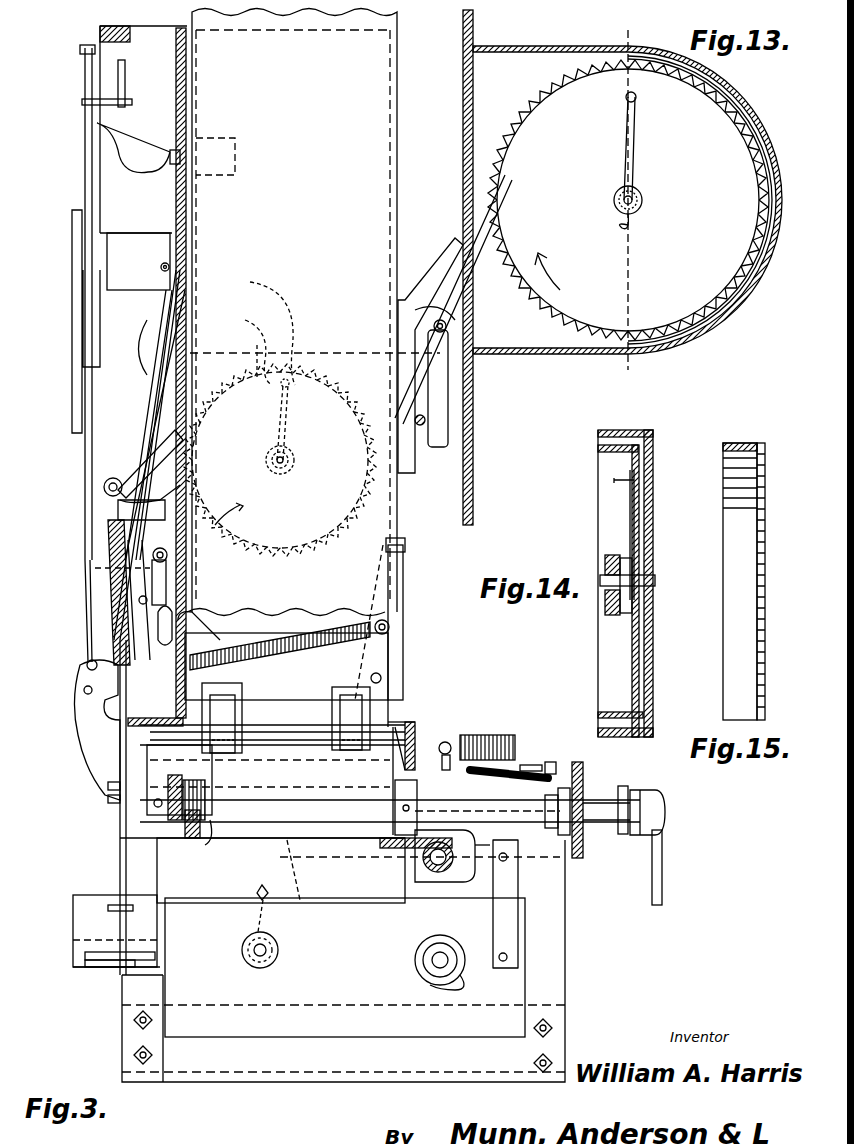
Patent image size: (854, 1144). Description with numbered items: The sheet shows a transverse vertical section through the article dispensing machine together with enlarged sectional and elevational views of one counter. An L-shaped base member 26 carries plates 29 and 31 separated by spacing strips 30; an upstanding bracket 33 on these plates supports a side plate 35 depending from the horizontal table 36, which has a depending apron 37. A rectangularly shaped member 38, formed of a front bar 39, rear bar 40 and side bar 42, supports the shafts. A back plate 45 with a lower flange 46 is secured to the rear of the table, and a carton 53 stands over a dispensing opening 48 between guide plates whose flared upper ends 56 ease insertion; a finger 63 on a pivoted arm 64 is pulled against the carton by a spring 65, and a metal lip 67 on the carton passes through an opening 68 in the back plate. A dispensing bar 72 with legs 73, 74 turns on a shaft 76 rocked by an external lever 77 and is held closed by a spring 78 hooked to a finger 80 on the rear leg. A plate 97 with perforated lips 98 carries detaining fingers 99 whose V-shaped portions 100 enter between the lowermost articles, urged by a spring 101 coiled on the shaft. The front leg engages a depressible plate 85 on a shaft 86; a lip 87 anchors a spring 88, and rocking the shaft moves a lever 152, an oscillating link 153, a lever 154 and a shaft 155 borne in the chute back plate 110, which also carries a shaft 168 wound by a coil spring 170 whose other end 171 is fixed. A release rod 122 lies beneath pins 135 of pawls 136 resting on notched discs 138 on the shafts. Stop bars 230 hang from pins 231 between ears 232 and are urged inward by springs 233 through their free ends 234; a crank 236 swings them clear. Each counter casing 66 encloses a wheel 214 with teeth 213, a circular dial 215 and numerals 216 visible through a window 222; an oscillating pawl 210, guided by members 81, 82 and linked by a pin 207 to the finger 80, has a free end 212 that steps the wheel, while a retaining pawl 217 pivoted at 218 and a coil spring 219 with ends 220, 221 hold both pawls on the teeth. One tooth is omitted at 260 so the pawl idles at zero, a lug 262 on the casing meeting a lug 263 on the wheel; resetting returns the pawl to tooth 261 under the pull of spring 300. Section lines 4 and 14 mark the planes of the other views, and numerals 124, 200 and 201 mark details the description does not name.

In FIG. 3, the section line 4 is at (53, 802).
In FIG. 13, the section line 14 is at (635, 205).
In FIG. 3, the L-shaped base member 26 is at (318, 1060).
In FIG. 3, the plate 29 is at (85, 967).
In FIG. 3, the spacing strips 30 is at (80, 962).
In FIG. 3, the plate 31 is at (78, 955).
In FIG. 3, the upstanding bracket 33 is at (85, 912).
In FIG. 3, the side plate 35 is at (345, 949).
In FIG. 3, the table 36 is at (415, 730).
In FIG. 3, the depending apron 37 is at (440, 719).
In FIG. 3, the rectangularly shaped member 38 is at (498, 768).
In FIG. 3, the front bar 39 is at (575, 860).
In FIG. 3, the rear bar 40 is at (170, 842).
In FIG. 3, the side bar 42 is at (281, 883).
In FIG. 3, the back plate 45 is at (180, 303).
In FIG. 3, the flange 46 is at (130, 713).
In FIG. 3, the openings 48 is at (413, 714).
In FIG. 3, the carton 53 is at (370, 91).
In FIG. 3, the flared upper ends 56 is at (380, 647).
In FIG. 3, the finger 63 is at (395, 545).
In FIG. 3, the pivoted arm 64 is at (400, 563).
In FIG. 3, the spring 65 is at (352, 628).
In FIG. 3, the casings 66 is at (260, 328).
In FIG. 13, the casings 66 is at (537, 47).
In FIG. 14, the casings 66 is at (612, 432).
In FIG. 3, the metal lip 67 is at (180, 592).
In FIG. 3, the opening 68 is at (180, 578).
In FIG. 3, the dispensing bar 72 is at (272, 756).
In FIG. 3, the front leg 73 is at (390, 789).
In FIG. 3, the rear leg 74 is at (150, 755).
In FIG. 3, the shaft 76 is at (397, 825).
In FIG. 3, the lever 77 is at (662, 885).
In FIG. 3, the springs 78 is at (110, 540).
In FIG. 3, the finger 80 is at (167, 816).
In FIG. 3, the guide member 81 is at (110, 482).
In FIG. 3, the guide member 82 is at (140, 455).
In FIG. 3, the depressible plate 85 is at (400, 848).
In FIG. 3, the shaft 86 is at (440, 872).
In FIG. 3, the lip 87 is at (445, 768).
In FIG. 3, the spring 88 is at (482, 750).
In FIG. 3, the plate 97 is at (345, 738).
In FIG. 3, the perforated lips 98 is at (188, 840).
In FIG. 3, the detaining fingers 99 is at (345, 725).
In FIG. 3, the V-shaped portion 100 is at (335, 690).
In FIG. 3, the spring 101 is at (212, 845).
In FIG. 3, the back plate 110 is at (296, 1012).
In FIG. 3, the release rod 122 is at (548, 765).
In FIG. 3, the lever 124 is at (505, 768).
In FIG. 3, the pins 135 is at (560, 775).
In FIG. 3, the pawls 136 is at (562, 795).
In FIG. 3, the discs 138 is at (560, 840).
In FIG. 3, the lever 152 is at (478, 862).
In FIG. 3, the oscillating link 153 is at (518, 920).
In FIG. 3, the lever 154 is at (425, 978).
In FIG. 3, the shaft 155 is at (432, 958).
In FIG. 3, the shaft 168 is at (243, 958).
In FIG. 3, the coil spring 170 is at (244, 945).
In FIG. 3, the spring end 171 is at (235, 905).
In FIG. 3, the bar 200 is at (115, 843).
In FIG. 3, the pin 201 is at (110, 905).
In FIG. 3, the pin 207 is at (110, 790).
In FIG. 3, the oscillating pawl 210 is at (165, 505).
In FIG. 13, the oscillating pawl 210 is at (413, 290).
In FIG. 13, the free end 212 is at (530, 104).
In FIG. 3, the teeth 213 is at (315, 355).
In FIG. 13, the teeth 213 is at (543, 105).
In FIG. 14, the teeth 213 is at (628, 443).
In FIG. 3, the wheel 214 is at (258, 325).
In FIG. 13, the wheel 214 is at (572, 90).
In FIG. 14, the wheel 214 is at (638, 458).
In FIG. 14, the circular dial 215 is at (620, 722).
In FIG. 15, the circular dial 215 is at (728, 474).
In FIG. 15, the numerals 216 is at (742, 455).
In FIG. 3, the retaining pawl 217 is at (125, 500).
In FIG. 13, the retaining pawl 217 is at (478, 275).
In FIG. 3, the pivot 218 is at (150, 555).
In FIG. 13, the pivot 218 is at (448, 328).
In FIG. 3, the coil spring 219 is at (95, 572).
In FIG. 13, the coil spring 219 is at (425, 300).
In FIG. 3, the spring end 220 is at (170, 515).
In FIG. 13, the spring end 220 is at (470, 210).
In FIG. 3, the spring end 221 is at (115, 588).
In FIG. 13, the spring end 221 is at (408, 430).
In FIG. 13, the window 222 is at (765, 198).
In FIG. 3, the stop bars 230 is at (155, 415).
In FIG. 3, the pin 231 is at (161, 267).
In FIG. 3, the ears 232 is at (160, 247).
In FIG. 3, the spring 233 is at (162, 296).
In FIG. 3, the free end 234 is at (147, 320).
In FIG. 3, the crank 236 is at (202, 629).
In FIG. 13, the omitted tooth space 260 is at (520, 143).
In FIG. 13, the tooth 261 is at (514, 160).
In FIG. 13, the lug 262 is at (770, 220).
In FIG. 13, the lug 263 is at (760, 236).
In FIG. 3, the spring 300 is at (283, 419).
In FIG. 13, the spring 300 is at (618, 165).
In FIG. 14, the spring 300 is at (625, 495).